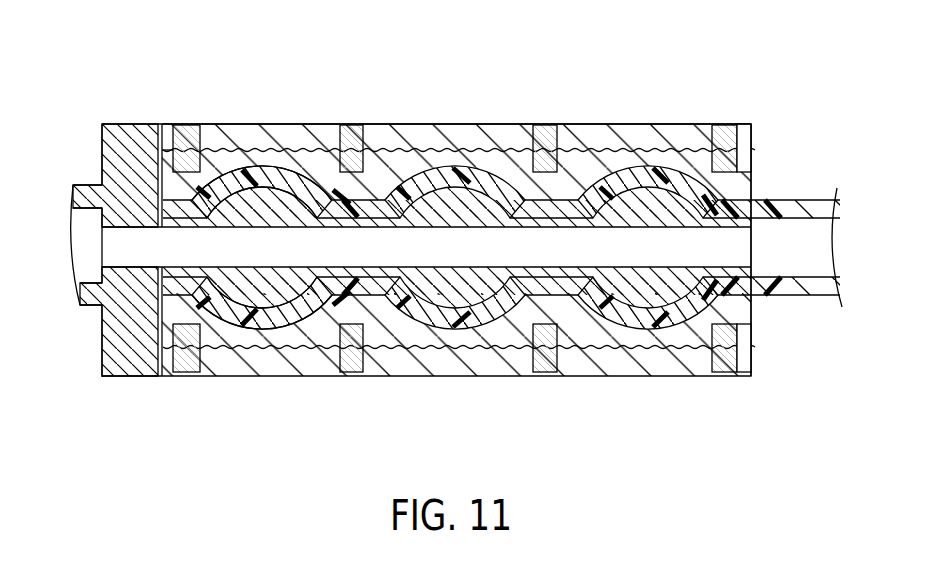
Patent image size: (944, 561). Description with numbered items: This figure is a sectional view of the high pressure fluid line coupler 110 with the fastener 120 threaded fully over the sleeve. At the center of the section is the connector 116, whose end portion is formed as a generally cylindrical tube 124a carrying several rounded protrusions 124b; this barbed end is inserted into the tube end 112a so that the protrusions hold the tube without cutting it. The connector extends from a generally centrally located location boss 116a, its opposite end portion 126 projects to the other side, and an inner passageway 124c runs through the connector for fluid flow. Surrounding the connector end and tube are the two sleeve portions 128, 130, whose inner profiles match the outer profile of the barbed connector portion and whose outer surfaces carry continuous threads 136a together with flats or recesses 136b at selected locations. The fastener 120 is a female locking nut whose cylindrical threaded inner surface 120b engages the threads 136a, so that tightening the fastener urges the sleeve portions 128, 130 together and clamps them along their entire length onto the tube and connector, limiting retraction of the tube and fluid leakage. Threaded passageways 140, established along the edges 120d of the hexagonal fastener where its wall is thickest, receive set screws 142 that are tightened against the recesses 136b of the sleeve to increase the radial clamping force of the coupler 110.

The high pressure fluid line coupler 110 is at (790, 93).
The tube end 112a is at (183, 204).
The connector 116 is at (78, 318).
The location boss 116a is at (137, 135).
The fastener 120 is at (458, 98).
The threaded inner surface 120b is at (250, 148).
The edges 120d is at (633, 123).
The cylindrical tube 124a is at (540, 220).
The protrusions 124b is at (250, 215).
The inner passageway 124c is at (84, 243).
The opposite end portion 126 is at (73, 186).
The sleeve portion 128 is at (291, 153).
The sleeve portion 130 is at (578, 348).
The threads 136a is at (218, 146).
The flats or recesses 136b is at (735, 186).
The threaded passageways 140 is at (735, 125).
The set screws 142 is at (548, 132).